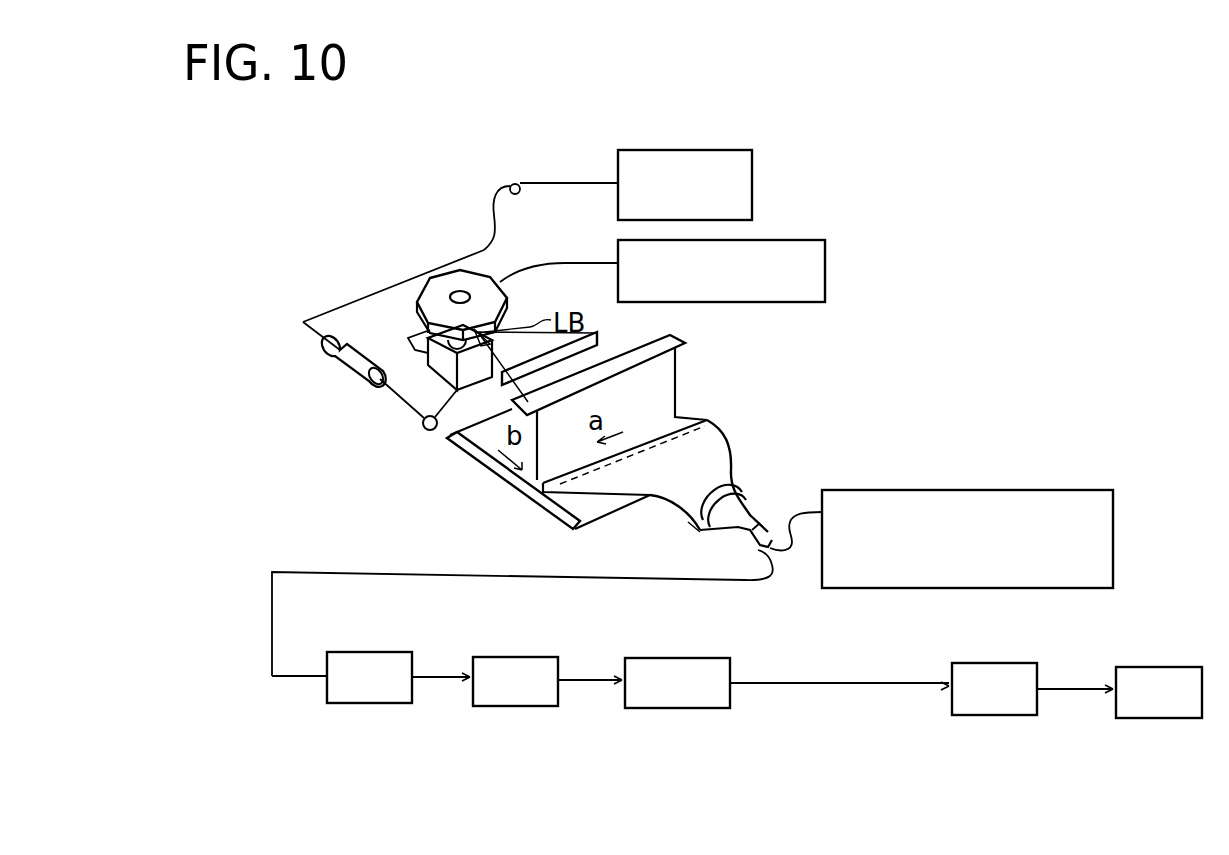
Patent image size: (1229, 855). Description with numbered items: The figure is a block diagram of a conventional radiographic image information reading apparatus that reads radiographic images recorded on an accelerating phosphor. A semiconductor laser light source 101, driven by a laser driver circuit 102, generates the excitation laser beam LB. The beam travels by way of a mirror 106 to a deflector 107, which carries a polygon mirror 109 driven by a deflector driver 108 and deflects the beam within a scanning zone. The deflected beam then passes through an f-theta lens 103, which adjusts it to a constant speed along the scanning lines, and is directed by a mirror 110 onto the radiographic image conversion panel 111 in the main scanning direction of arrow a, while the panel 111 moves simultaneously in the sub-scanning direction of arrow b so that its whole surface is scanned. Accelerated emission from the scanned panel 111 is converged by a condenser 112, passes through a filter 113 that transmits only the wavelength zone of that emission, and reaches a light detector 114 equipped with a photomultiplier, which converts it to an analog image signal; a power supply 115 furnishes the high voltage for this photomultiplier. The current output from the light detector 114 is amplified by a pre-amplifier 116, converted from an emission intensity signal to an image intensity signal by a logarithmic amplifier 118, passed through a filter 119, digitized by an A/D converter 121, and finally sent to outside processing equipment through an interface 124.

The semiconductor laser light source 101 is at (352, 378).
The laser driver circuit 102 is at (708, 150).
The f-theta lens 103 is at (600, 334).
The mirror 106 is at (423, 430).
The deflector 107 is at (463, 393).
The deflector driver 108 is at (826, 272).
The polygon mirror 109 is at (502, 284).
The mirror 110 is at (688, 343).
The radiographic image conversion panel 111 is at (532, 506).
The condenser 112 is at (727, 423).
The filter 113 is at (746, 512).
The light detector 114 is at (702, 532).
The power supply 115 is at (1116, 528).
The pre-amplifier 116 is at (357, 704).
The logarithmic amplifier 118 is at (500, 707).
The filter 119 is at (675, 709).
The A/D converter 121 is at (980, 716).
The interface 124 is at (1160, 719).